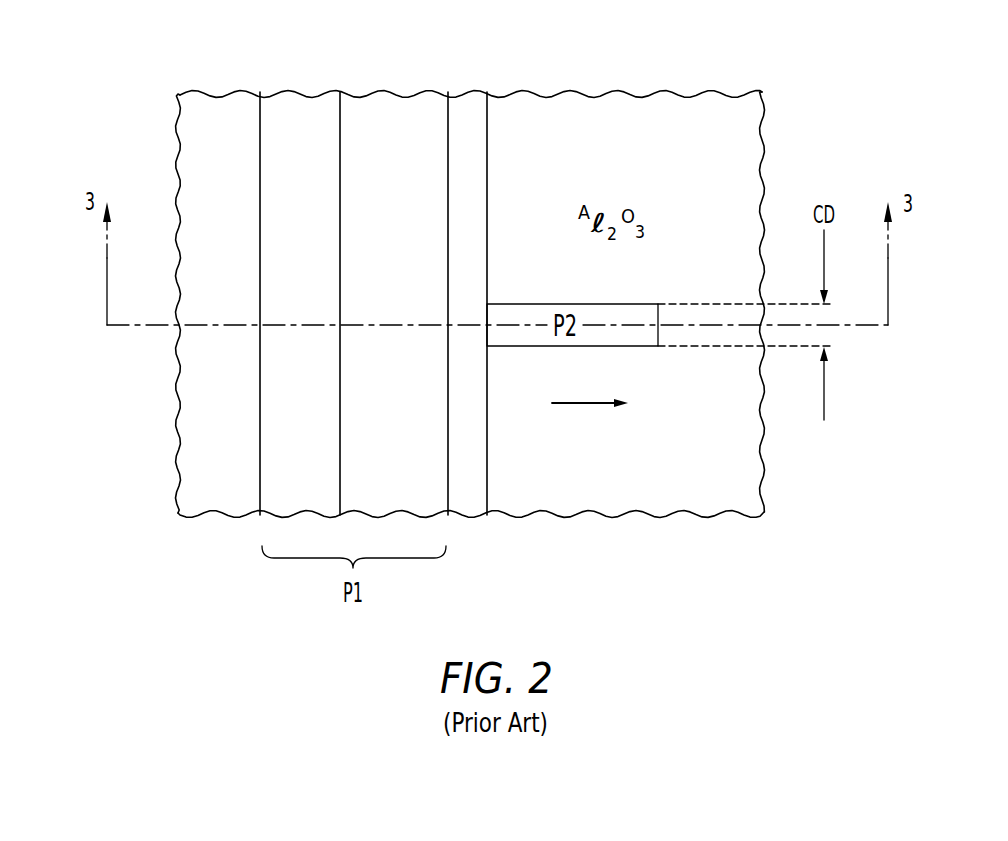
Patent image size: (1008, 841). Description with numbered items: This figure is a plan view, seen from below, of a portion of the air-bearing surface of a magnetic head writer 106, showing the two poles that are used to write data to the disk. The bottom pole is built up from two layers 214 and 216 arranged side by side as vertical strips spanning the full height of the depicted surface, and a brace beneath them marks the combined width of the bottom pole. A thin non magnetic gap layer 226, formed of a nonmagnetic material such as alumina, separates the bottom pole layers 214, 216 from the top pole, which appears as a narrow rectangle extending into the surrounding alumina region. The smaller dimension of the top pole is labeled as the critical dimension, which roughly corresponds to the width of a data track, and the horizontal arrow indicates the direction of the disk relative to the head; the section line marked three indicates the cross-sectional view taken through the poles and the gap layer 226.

The write head 106 is at (126, 100).
The layer 214 is at (313, 287).
The layer 216 is at (408, 287).
The non magnetic gap layer 226 is at (468, 507).